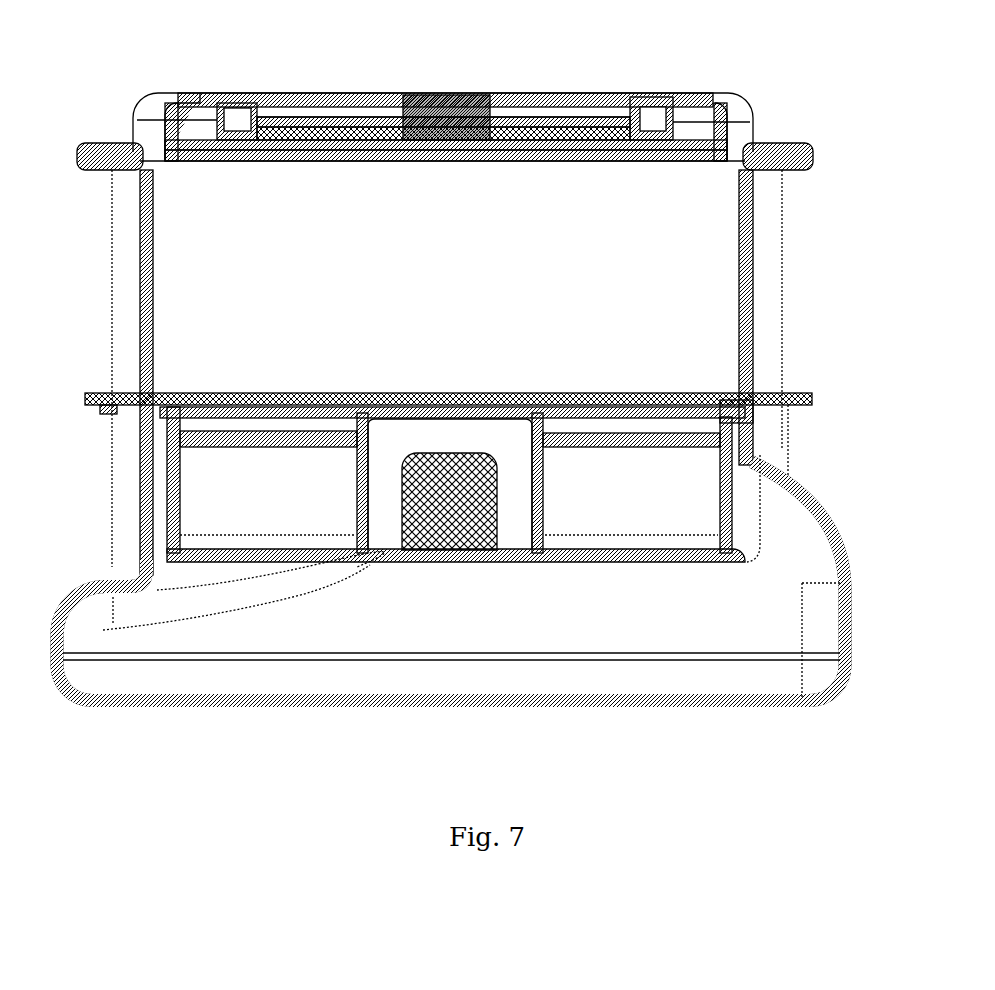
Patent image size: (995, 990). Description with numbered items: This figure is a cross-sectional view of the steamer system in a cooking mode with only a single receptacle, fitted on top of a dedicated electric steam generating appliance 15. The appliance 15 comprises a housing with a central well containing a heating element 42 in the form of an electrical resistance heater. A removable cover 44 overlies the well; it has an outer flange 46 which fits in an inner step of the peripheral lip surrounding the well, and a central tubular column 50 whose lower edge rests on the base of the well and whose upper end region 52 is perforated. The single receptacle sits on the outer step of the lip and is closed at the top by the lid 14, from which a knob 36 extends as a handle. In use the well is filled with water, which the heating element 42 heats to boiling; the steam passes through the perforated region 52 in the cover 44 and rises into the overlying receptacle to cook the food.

The lid 14 is at (673, 97).
The knob 36 is at (477, 100).
The perforated upper end region 52 is at (493, 410).
The central tubular column 50 is at (542, 490).
The heating element 42 is at (497, 512).
The removable cover 44 is at (660, 435).
The outer flange 46 is at (733, 398).
The steam generating appliance 15 is at (832, 515).